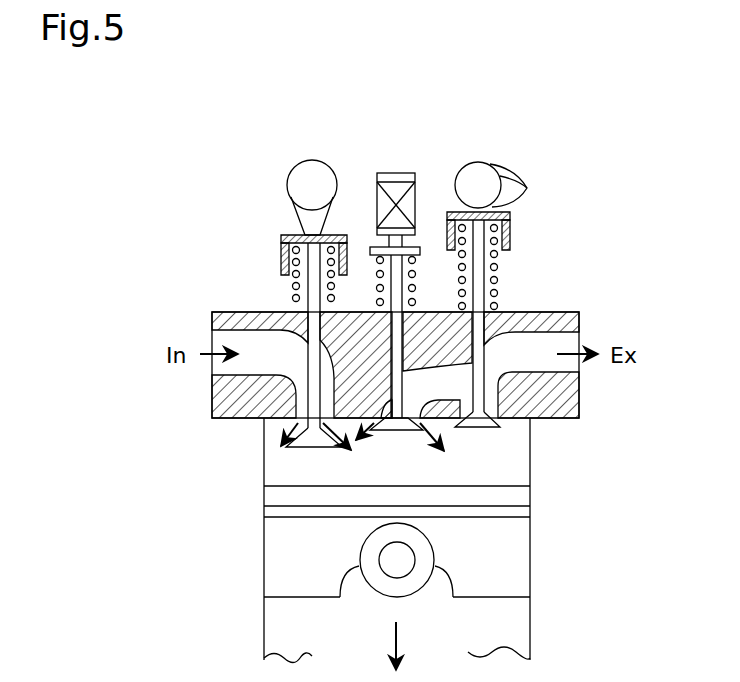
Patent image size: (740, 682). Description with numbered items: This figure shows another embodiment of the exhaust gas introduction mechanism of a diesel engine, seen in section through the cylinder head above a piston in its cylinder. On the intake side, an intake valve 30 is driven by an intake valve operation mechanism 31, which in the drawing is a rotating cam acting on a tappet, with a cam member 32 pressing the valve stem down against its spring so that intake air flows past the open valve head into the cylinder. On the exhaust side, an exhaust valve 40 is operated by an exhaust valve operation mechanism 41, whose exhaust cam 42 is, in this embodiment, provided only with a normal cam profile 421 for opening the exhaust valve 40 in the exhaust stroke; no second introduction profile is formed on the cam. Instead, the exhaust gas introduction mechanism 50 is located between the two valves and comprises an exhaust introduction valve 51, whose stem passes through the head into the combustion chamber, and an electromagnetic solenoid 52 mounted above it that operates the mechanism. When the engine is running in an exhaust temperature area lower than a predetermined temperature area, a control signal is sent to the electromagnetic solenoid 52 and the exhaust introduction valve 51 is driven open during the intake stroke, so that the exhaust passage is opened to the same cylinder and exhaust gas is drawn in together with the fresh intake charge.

The intake valve 30 is at (310, 287).
The intake valve operation mechanism 31 is at (312, 178).
The intake cam 32 is at (326, 149).
The exhaust valve 40 is at (485, 271).
The exhaust valve operation mechanism 41 is at (503, 152).
The exhaust cam 42 is at (504, 179).
The normal cam profile 421 is at (524, 188).
The exhaust gas introduction mechanism 50 is at (401, 156).
The exhaust introduction valve 51 is at (392, 347).
The electromagnetic solenoid 52 is at (418, 199).